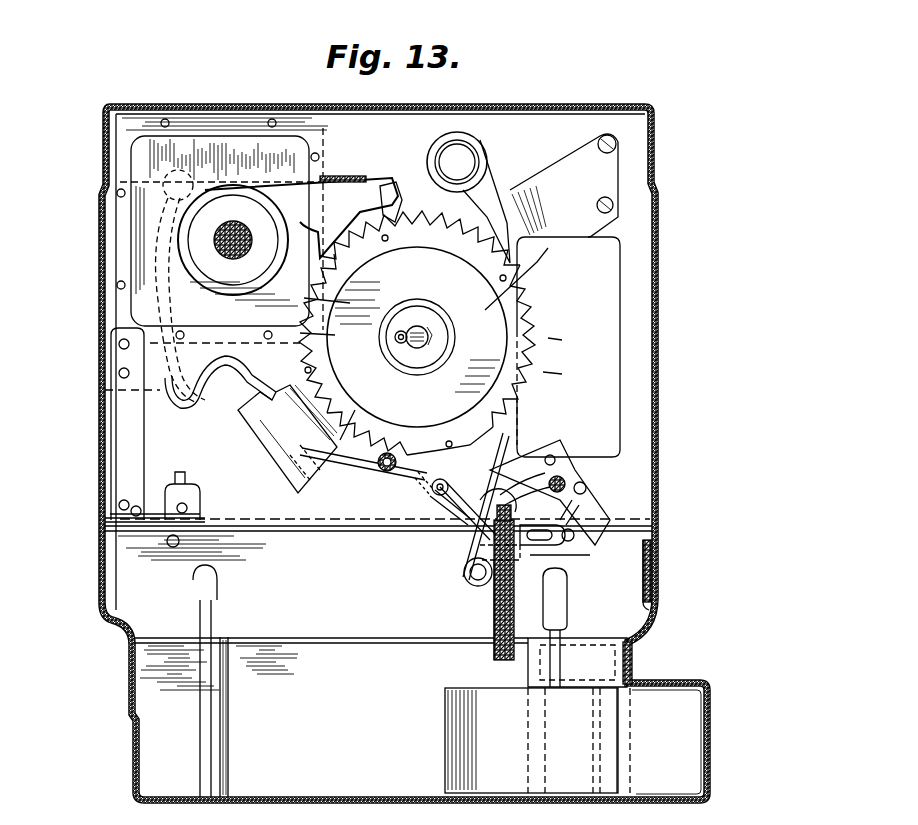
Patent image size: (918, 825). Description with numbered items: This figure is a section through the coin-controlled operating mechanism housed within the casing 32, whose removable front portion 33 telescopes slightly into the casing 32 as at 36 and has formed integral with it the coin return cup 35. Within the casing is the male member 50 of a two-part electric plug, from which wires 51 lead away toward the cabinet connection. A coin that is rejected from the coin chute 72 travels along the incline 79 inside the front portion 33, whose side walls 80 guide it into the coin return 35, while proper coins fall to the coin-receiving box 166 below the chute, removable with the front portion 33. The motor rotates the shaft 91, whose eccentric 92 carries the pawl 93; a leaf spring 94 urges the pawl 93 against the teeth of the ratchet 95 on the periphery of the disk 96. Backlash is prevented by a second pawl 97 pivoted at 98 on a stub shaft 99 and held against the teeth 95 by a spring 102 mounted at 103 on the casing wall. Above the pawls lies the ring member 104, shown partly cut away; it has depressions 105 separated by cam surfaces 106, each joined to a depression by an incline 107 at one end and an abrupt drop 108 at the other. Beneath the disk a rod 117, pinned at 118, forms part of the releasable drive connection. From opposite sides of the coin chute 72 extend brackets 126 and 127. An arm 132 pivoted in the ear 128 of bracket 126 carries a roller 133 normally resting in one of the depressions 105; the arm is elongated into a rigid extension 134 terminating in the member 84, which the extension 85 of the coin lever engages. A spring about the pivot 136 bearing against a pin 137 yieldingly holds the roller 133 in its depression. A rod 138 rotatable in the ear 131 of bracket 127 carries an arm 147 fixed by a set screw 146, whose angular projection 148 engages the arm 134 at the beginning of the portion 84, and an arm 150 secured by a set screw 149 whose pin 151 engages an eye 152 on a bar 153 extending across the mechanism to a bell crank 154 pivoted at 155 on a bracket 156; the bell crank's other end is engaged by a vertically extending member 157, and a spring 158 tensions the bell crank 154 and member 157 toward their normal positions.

The casing 32 is at (656, 352).
The removable front portion 33 is at (632, 665).
The coin return cup 35 is at (688, 732).
The telescoping joint 36 is at (652, 552).
The male plug member 50 is at (275, 455).
The wires 51 is at (170, 248).
The coin chute 72 is at (494, 620).
The incline 79 is at (460, 742).
The side walls 80 is at (580, 685).
The member 84 is at (472, 585).
The extension 85 is at (511, 512).
The shaft 91 is at (233, 236).
The eccentric 92 is at (256, 200).
The pawl 93 is at (382, 190).
The leaf spring 94 is at (346, 176).
The ratchet 95 is at (486, 310).
The disk 96 is at (523, 279).
The second pawl 97 is at (494, 196).
The pivot 98 is at (470, 145).
The stub shaft 99 is at (452, 150).
The spring 102 is at (530, 215).
The spring mounting 103 is at (616, 144).
The ring member 104 is at (540, 355).
The depressions 105 is at (449, 364).
The cam surfaces 106 is at (287, 355).
The incline 107 is at (447, 336).
The abrupt drop 108 is at (300, 373).
The rod 117 is at (422, 330).
The pin 118 is at (402, 330).
The bracket 126 is at (478, 586).
The bracket 127 is at (565, 585).
The ear 128 is at (460, 560).
The ear 131 is at (548, 640).
The arm 132 is at (440, 478).
The roller 133 is at (392, 452).
The rigid extension 134 is at (448, 520).
The pivot 136 is at (486, 460).
The pin 137 is at (390, 470).
The rod 138 is at (565, 482).
The set screw 146 is at (586, 488).
The arm 147 is at (525, 475).
The angular projection 148 is at (510, 440).
The set screw 149 is at (554, 456).
The arm 150 is at (578, 513).
The pin 151 is at (566, 535).
The eye 152 is at (575, 552).
The bar 153 is at (318, 533).
The bell crank 154 is at (110, 520).
The pivot 155 is at (140, 506).
The bracket 156 is at (118, 503).
The vertically extending member 157 is at (188, 484).
The spring 158 is at (173, 548).
The coin-receiving box 166 is at (340, 650).